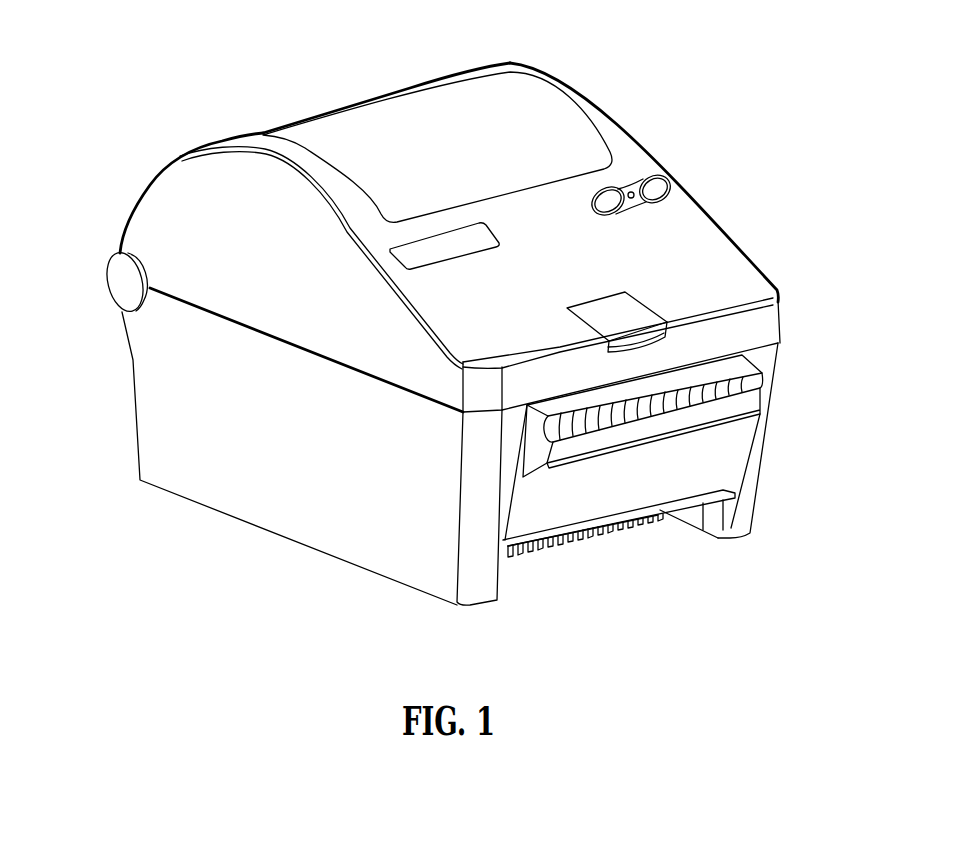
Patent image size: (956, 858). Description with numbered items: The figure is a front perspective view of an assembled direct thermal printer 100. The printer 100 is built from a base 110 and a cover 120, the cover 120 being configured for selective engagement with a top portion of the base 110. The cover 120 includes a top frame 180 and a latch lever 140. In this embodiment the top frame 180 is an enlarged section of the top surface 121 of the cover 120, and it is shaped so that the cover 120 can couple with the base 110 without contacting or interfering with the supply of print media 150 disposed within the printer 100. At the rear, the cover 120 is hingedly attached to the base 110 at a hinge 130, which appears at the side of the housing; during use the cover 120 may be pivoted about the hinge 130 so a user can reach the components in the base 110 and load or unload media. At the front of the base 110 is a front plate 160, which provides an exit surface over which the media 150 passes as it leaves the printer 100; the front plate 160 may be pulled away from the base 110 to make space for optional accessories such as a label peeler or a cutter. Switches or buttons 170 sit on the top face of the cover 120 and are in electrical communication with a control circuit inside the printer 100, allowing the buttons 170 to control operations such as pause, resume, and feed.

The direct thermal printer 100 is at (610, 40).
The base 110 is at (137, 413).
The cover 120 is at (152, 185).
The top surface 121 is at (583, 100).
The hinge 130 is at (108, 290).
The latch lever 140 is at (633, 317).
The print media 150 is at (742, 370).
The front plate 160 is at (643, 507).
The buttons 170 is at (659, 186).
The top frame 180 is at (367, 100).